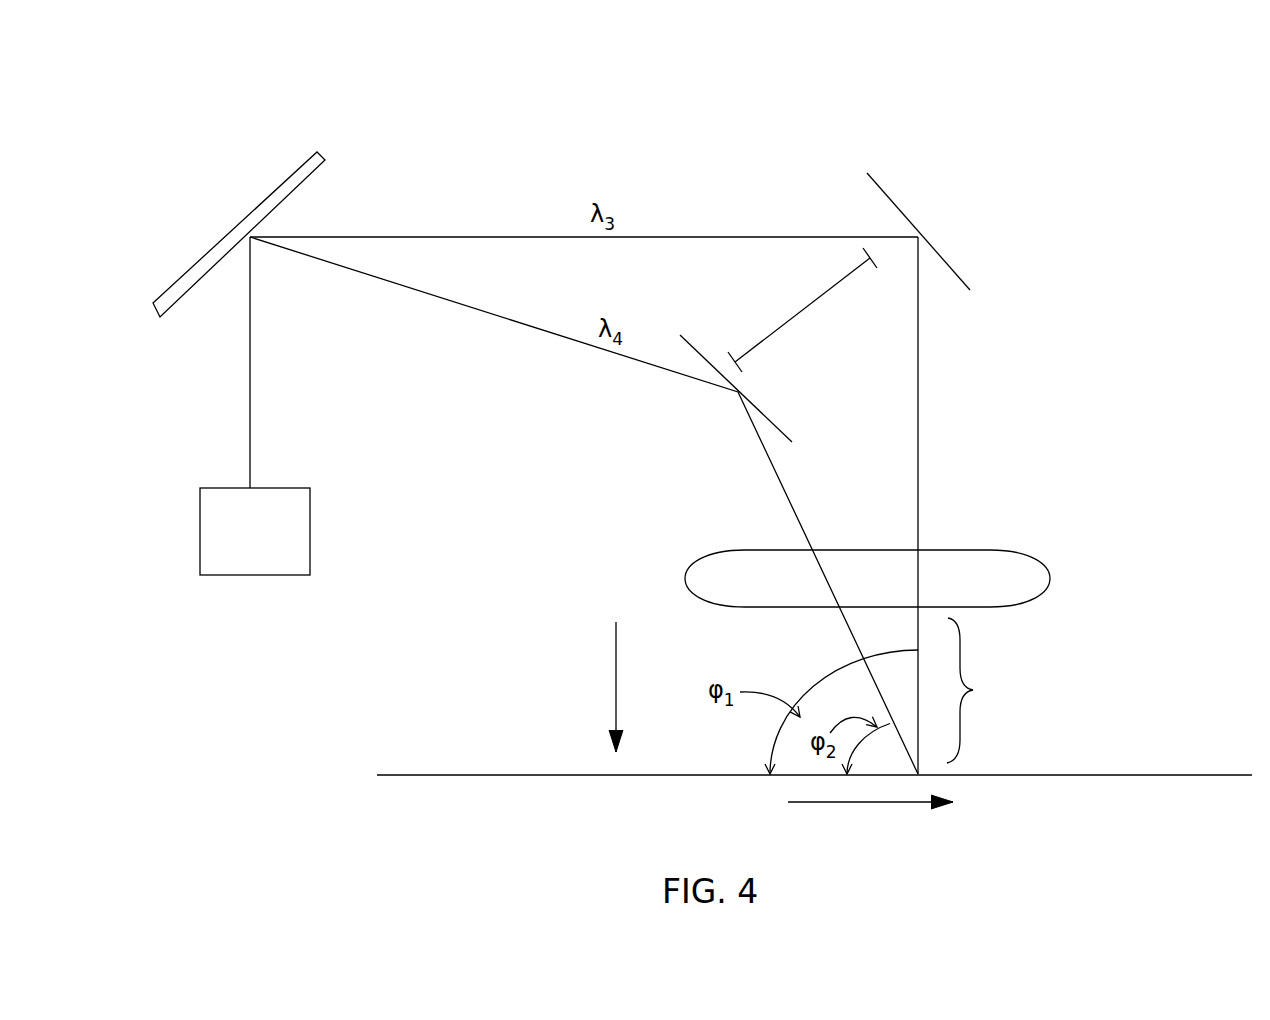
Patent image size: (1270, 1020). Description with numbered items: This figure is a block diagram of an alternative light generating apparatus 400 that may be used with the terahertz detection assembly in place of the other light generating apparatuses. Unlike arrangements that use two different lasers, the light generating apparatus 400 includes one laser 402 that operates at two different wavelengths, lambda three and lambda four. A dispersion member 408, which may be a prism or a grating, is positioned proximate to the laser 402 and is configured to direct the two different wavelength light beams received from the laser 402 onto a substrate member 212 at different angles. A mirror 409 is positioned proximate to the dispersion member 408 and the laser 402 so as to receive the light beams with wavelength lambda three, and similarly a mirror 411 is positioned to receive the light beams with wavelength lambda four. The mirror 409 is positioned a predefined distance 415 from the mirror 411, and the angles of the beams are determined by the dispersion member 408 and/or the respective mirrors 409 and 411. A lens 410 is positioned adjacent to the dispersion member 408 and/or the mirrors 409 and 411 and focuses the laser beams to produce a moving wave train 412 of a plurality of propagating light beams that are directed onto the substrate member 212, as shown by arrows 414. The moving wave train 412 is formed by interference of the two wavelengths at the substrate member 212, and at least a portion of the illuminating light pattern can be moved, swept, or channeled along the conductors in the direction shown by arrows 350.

The light generating apparatus 400 is at (1105, 97).
The laser 402 is at (255, 531).
The dispersion member 408 is at (267, 193).
The mirror 409 is at (905, 198).
The lens 410 is at (985, 550).
The mirror 411 is at (762, 397).
The moving wave train 412 is at (985, 690).
The arrows 414 is at (616, 645).
The predefined distance 415 is at (827, 287).
The arrows 350 is at (833, 802).
The substrate member 212 is at (1160, 773).